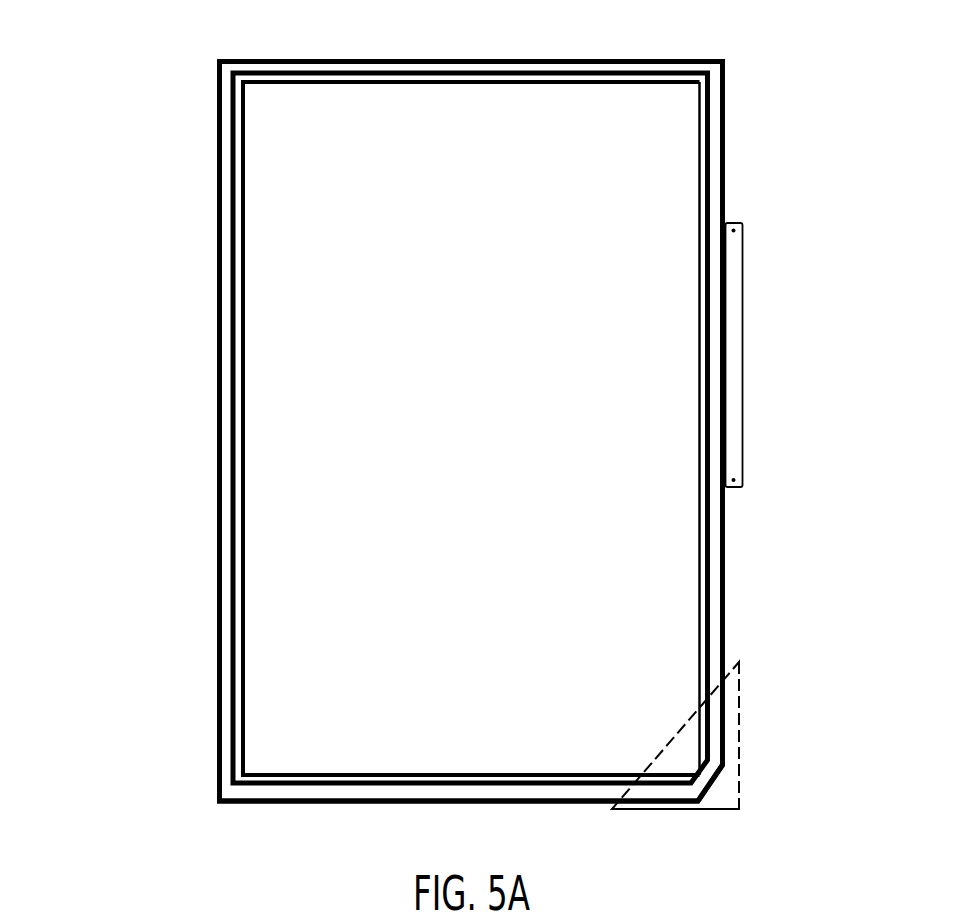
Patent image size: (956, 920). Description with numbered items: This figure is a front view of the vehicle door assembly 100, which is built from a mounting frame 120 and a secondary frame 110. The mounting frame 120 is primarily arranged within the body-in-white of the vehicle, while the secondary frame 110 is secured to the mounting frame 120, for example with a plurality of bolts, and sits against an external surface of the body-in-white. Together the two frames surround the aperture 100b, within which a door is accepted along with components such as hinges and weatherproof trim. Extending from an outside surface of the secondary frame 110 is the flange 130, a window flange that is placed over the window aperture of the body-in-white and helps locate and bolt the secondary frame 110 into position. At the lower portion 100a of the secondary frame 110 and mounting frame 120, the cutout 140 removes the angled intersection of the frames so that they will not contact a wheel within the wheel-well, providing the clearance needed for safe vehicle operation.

The vehicle door assembly 100 is at (146, 53).
The lower portion 100a is at (697, 812).
The aperture 100b is at (612, 171).
The secondary frame 110 is at (246, 276).
The mounting frame 120 is at (725, 157).
The flange 130 is at (735, 342).
The cutout 140 is at (732, 796).